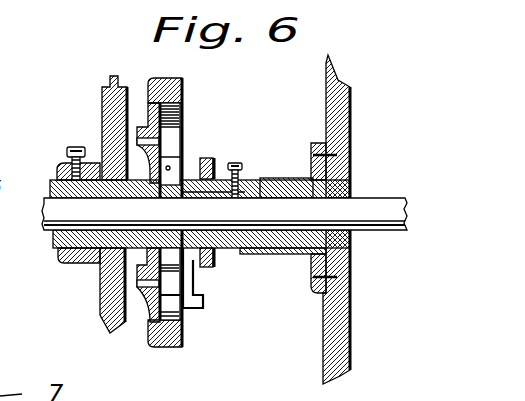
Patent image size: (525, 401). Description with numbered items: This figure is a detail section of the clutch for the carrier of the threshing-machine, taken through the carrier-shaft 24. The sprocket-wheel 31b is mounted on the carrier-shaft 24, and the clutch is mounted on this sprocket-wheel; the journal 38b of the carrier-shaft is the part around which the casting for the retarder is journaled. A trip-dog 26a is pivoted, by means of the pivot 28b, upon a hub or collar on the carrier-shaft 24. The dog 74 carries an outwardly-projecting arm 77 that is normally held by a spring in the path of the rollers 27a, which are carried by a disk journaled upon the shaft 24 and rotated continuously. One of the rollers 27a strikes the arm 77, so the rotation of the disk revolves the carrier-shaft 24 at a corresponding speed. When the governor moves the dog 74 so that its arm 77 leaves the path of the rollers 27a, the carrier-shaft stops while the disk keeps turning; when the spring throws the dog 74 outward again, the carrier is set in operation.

The outwardly-projecting arm 77 is at (192, 216).
The rollers 27a is at (192, 121).
The journal of the carrier-shaft 38b is at (186, 176).
The trip-dog 26a is at (242, 166).
The pivot 28b is at (213, 262).
The dog 74 is at (186, 308).
The sprocket-wheel 31b is at (100, 317).
The carrier-shaft 24 is at (47, 233).